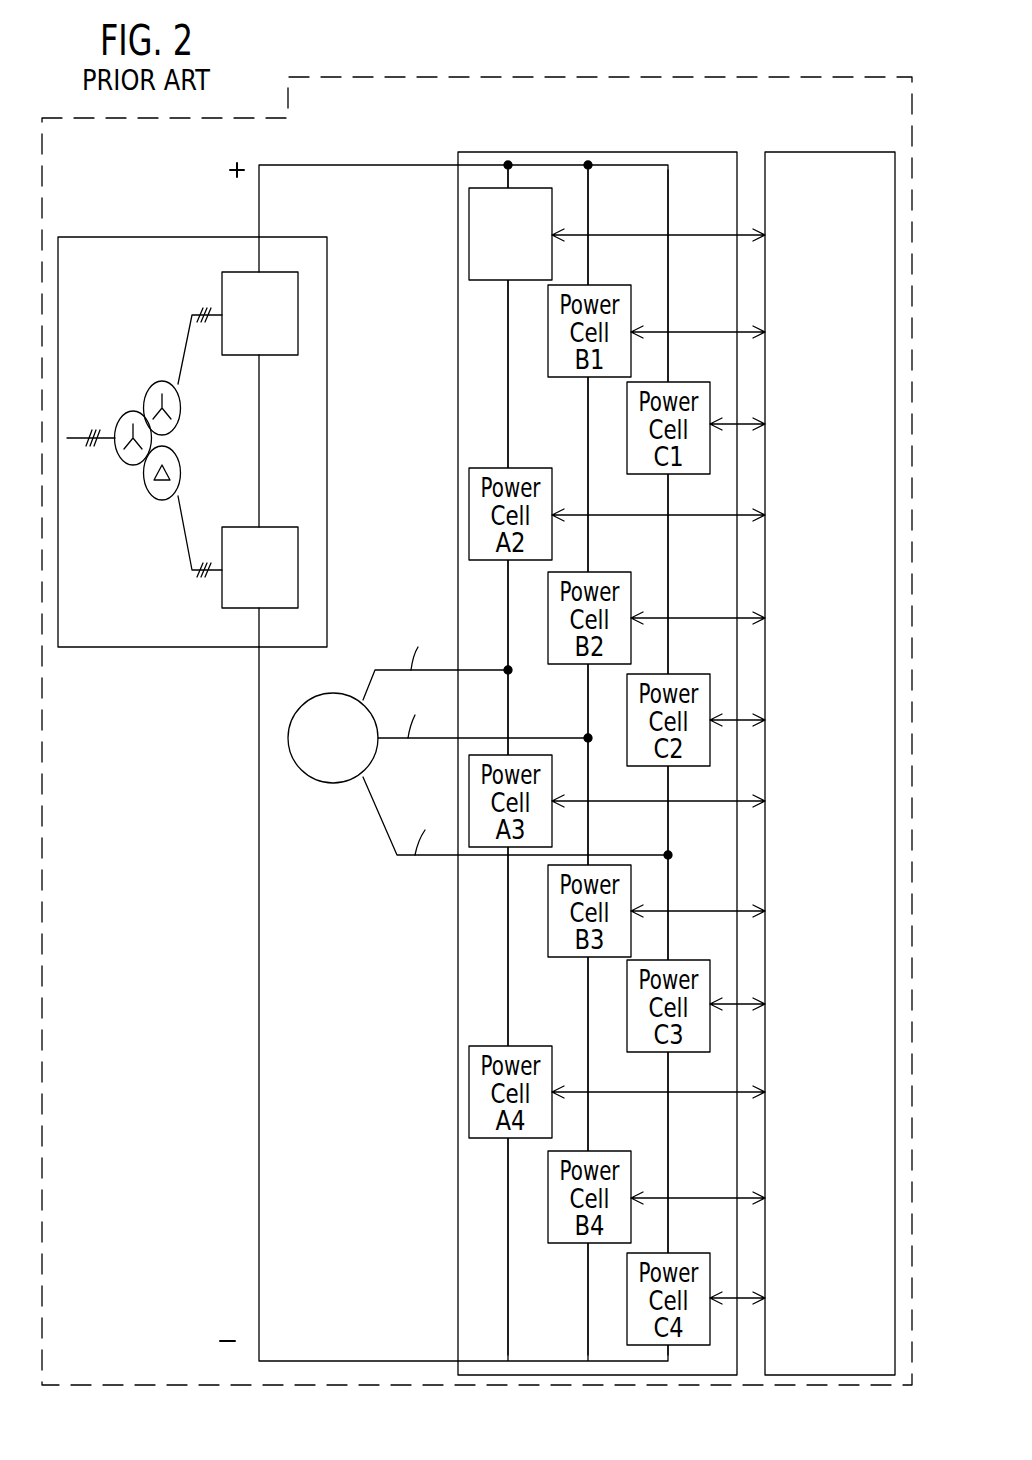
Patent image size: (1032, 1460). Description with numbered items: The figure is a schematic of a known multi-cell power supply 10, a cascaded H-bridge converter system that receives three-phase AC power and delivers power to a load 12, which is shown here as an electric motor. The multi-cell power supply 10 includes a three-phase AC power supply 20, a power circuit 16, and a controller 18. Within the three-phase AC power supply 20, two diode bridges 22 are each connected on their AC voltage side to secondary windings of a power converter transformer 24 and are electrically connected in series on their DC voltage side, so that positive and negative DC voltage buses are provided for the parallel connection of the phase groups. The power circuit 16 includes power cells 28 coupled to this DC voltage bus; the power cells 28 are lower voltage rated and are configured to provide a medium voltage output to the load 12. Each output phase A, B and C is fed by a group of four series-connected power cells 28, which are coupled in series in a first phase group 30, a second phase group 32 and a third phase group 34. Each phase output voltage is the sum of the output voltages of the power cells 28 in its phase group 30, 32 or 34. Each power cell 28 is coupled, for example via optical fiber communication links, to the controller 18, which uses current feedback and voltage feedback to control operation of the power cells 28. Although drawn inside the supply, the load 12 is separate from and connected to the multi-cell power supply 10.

The multi-cell power supply 10 is at (703, 73).
The load 12 is at (333, 783).
The power circuit 16 is at (640, 152).
The controller 18 is at (824, 152).
The three-phase AC power supply 20 is at (157, 237).
The diode bridges 22 is at (272, 336).
The power converter transformer 24 is at (115, 396).
The power cells 28 is at (468, 236).
The first phase group 30 is at (521, 128).
The second phase group 32 is at (593, 128).
The third phase group 34 is at (724, 128).